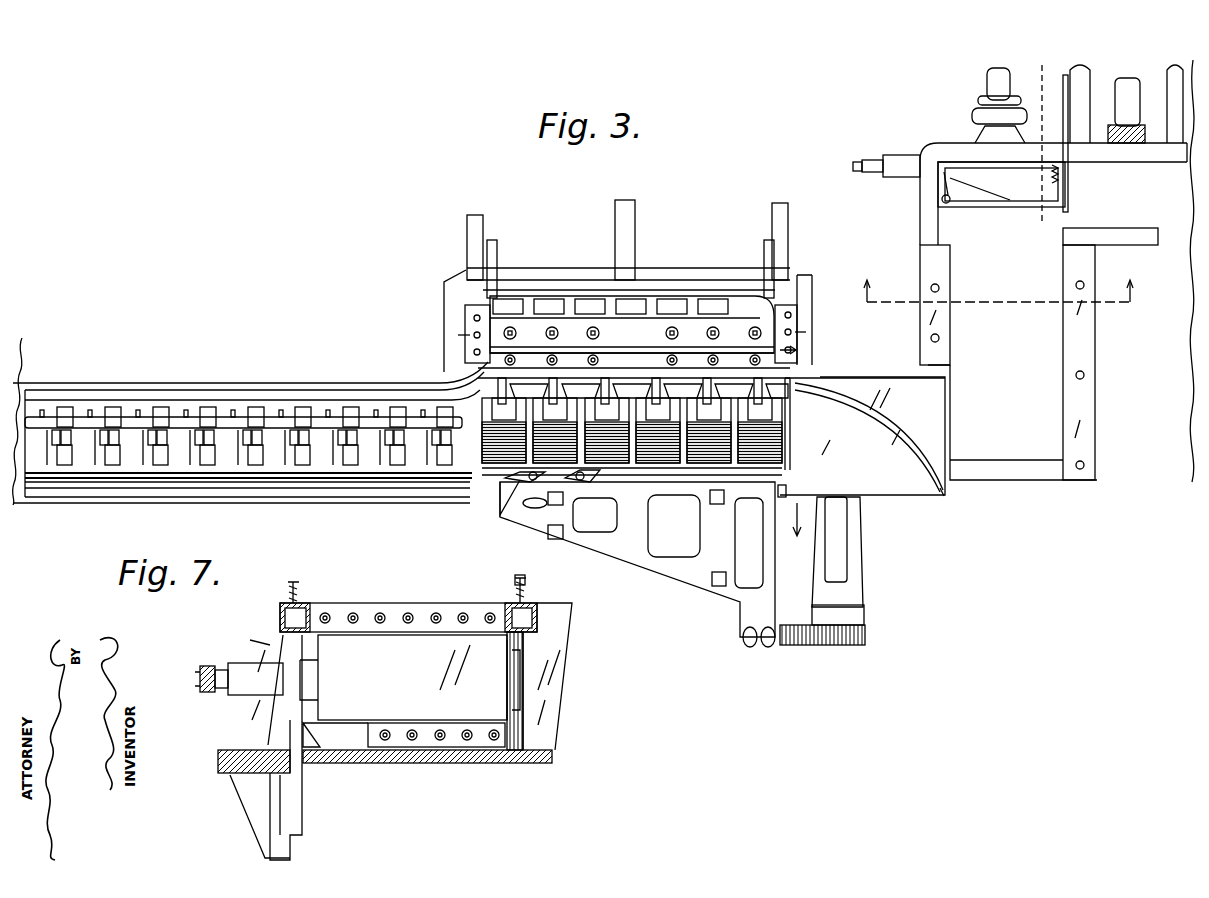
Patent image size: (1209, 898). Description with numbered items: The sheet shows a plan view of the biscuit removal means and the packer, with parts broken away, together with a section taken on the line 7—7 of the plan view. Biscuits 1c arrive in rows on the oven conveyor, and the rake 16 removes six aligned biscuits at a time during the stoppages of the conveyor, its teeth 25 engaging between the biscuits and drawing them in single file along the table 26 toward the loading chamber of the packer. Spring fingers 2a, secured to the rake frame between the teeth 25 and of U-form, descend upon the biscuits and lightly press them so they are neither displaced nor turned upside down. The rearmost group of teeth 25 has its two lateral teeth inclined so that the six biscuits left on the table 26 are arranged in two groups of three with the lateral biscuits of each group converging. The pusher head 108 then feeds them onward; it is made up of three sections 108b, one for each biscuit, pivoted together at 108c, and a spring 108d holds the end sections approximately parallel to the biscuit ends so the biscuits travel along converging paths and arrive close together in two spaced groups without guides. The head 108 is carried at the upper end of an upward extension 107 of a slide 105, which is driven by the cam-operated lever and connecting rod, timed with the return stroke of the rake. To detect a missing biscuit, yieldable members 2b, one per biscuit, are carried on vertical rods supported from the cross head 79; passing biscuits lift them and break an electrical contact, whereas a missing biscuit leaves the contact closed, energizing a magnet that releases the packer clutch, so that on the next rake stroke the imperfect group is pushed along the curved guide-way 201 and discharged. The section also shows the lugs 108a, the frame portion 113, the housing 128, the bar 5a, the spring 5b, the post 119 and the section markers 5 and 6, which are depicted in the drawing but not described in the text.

In FIG. 3, the rake 16 is at (250, 421).
In FIG. 3, the rake teeth 25 is at (226, 408).
In FIG. 3, the spring fingers 2a is at (253, 462).
In FIG. 3, the table 26 is at (362, 472).
In FIG. 3, the cross head 79 is at (628, 289).
In FIG. 3, the pusher head 108 is at (498, 473).
In FIG. 3, the frame lugs 108a is at (615, 540).
In FIG. 3, the pusher head sections 108b is at (786, 490).
In FIG. 3, the pivots 108c is at (555, 492).
In FIG. 3, the spring 108d is at (515, 485).
In FIG. 3, the slide 105 is at (852, 555).
In FIG. 3, the upward extension 107 is at (835, 647).
In FIG. 3, the biscuits 1c is at (780, 432).
In FIG. 3, the yieldable members 2b is at (785, 412).
In FIG. 3, the curved guide-way 201 is at (942, 496).
In FIG. 3, the machine frame 113 is at (1023, 271).
In FIG. 3, the housing 128 is at (1000, 205).
In FIG. 7, the housing 128 is at (383, 719).
In FIG. 3, the vertical bar 5a is at (1068, 190).
In FIG. 7, the vertical bar 5a is at (515, 672).
In FIG. 3, the spring 5b is at (1050, 185).
In FIG. 3, the section line 6 is at (1055, 222).
In FIG. 3, the frame post 119 is at (1039, 354).
In FIG. 3, the section line 7— 7 is at (992, 280).
In FIG. 3, the section line 5 is at (788, 450).